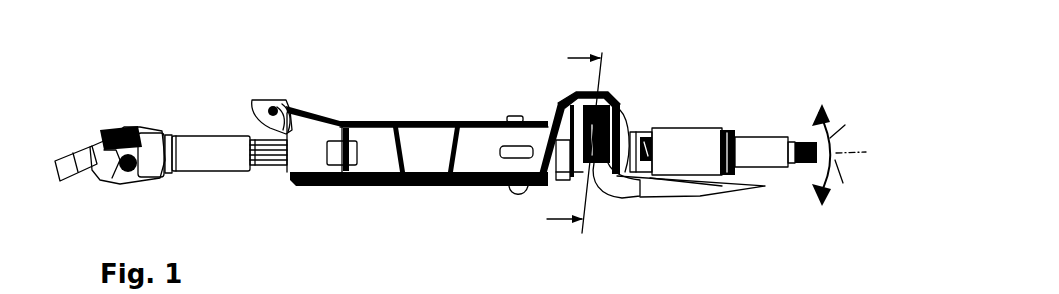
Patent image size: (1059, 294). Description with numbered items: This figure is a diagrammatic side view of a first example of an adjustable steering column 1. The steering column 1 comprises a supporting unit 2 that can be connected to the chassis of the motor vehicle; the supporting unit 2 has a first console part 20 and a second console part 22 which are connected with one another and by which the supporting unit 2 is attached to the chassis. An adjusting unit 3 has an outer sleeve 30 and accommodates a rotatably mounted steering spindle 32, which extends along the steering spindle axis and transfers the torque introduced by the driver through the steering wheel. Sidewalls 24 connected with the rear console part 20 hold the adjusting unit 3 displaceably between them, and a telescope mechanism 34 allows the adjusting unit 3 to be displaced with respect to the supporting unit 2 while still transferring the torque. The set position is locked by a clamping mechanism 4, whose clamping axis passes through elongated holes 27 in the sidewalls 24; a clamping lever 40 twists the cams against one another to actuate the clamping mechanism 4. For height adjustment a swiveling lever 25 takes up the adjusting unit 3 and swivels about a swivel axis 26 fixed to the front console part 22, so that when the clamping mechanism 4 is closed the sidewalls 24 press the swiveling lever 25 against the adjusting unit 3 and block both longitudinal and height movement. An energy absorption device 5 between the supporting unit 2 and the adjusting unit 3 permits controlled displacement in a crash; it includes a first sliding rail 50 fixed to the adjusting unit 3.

The adjustable steering column 1 is at (490, 88).
The supporting unit 2 is at (604, 92).
The adjusting unit 3 is at (686, 140).
The clamping mechanism 4 is at (612, 216).
The energy absorption device 5 is at (638, 86).
The first console part 20 is at (577, 160).
The second console part 22 is at (262, 100).
The sidewalls 24 is at (563, 167).
The swiveling lever 25 is at (375, 162).
The swivel axis 26 is at (286, 107).
The elongated holes 27 is at (574, 99).
The outer sleeve 30 is at (708, 142).
The steering spindle 32 is at (776, 152).
The telescope mechanism 34 is at (240, 128).
The clamping lever 40 is at (614, 184).
The first sliding rail 50 is at (649, 149).